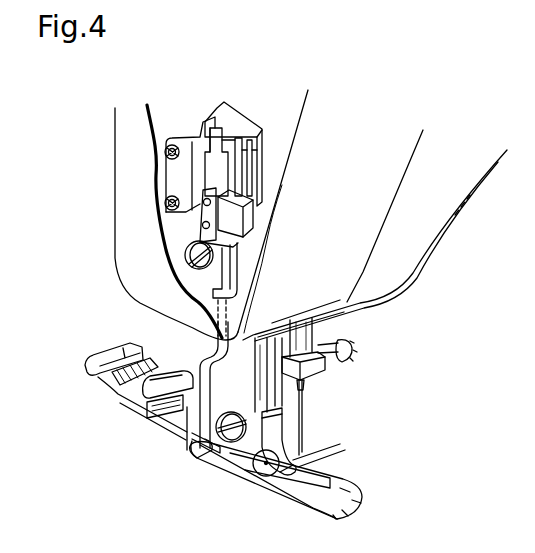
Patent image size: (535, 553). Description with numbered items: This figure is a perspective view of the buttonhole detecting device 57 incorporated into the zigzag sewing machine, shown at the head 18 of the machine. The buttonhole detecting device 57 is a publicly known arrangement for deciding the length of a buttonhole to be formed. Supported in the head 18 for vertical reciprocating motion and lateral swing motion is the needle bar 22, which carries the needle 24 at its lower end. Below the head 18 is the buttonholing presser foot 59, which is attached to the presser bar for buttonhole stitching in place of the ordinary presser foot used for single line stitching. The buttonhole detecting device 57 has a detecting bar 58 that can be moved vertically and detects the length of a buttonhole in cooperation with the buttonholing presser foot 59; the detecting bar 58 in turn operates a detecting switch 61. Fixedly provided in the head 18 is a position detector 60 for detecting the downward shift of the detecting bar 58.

The head 18 is at (135, 250).
The buttonhole detecting device 57 is at (197, 116).
The detecting switch 61 is at (244, 124).
The position detector 60 is at (247, 213).
The needle bar 22 is at (310, 334).
The needle 24 is at (302, 412).
The detecting bar 58 is at (199, 358).
The buttonholing presser foot 59 is at (318, 461).